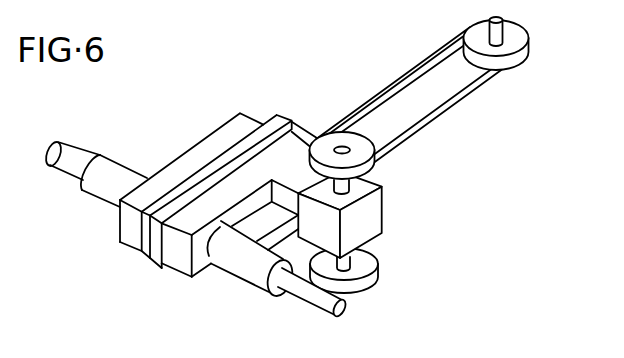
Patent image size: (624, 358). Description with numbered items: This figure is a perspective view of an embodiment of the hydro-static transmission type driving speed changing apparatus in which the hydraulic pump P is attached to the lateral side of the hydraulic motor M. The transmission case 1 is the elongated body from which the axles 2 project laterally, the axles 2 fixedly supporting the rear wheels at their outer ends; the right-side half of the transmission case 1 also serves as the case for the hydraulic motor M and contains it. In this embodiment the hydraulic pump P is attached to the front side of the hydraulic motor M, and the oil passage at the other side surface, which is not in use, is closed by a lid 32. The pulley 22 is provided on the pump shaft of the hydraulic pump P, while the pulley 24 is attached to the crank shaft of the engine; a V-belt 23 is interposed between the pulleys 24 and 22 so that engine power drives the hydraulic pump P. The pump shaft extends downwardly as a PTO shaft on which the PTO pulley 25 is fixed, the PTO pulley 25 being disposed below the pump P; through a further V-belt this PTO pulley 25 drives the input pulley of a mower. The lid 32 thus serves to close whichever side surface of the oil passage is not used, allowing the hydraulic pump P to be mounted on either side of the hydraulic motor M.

The transmission case 1 is at (185, 158).
The axle 2 is at (315, 303).
The pulley 22 is at (362, 158).
The V-belt 23 is at (452, 110).
The pulley 24 is at (517, 40).
The PTO pulley 25 is at (368, 282).
The lid 32 is at (305, 130).
The hydraulic motor M is at (297, 178).
The hydraulic pump P is at (362, 238).